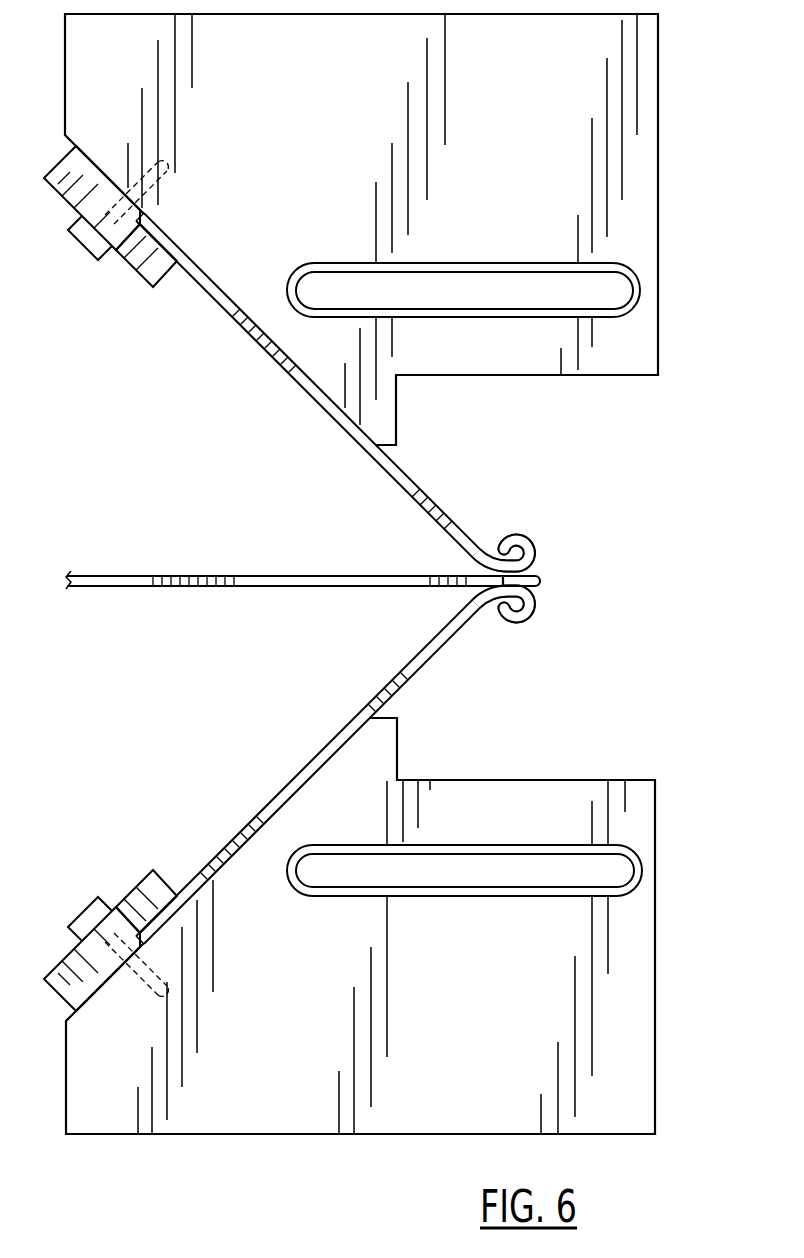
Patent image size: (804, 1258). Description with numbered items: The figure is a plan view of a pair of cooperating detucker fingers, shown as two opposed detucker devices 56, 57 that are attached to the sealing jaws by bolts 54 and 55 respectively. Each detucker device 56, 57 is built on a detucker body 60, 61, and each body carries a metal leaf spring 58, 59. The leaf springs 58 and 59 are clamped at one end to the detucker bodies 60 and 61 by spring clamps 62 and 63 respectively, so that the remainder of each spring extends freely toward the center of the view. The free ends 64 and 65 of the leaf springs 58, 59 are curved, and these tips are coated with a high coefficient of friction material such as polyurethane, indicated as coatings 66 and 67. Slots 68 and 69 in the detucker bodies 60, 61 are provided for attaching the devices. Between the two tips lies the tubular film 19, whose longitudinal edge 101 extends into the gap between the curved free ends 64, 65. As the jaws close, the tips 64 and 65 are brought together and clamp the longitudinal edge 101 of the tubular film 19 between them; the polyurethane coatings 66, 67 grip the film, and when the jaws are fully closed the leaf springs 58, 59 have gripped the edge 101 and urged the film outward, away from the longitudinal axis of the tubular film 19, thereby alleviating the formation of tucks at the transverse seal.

The tubular film 19 is at (266, 588).
The bolt 54 is at (74, 913).
The bolt 55 is at (90, 258).
The detucker device 56 is at (370, 104).
The detucker device 57 is at (448, 985).
The metal leaf spring 58 is at (426, 684).
The metal leaf spring 59 is at (404, 467).
The detucker body 60 is at (652, 985).
The detucker body 61 is at (637, 135).
The spring clamp 62 is at (163, 875).
The spring clamp 63 is at (152, 268).
The free end 64 is at (494, 618).
The free end 65 is at (498, 541).
The high coefficient of friction material coating 66 is at (537, 612).
The high coefficient of friction material coating 67 is at (536, 551).
The slot 68 is at (523, 862).
The slot 69 is at (489, 280).
The longitudinal edge 101 is at (548, 580).